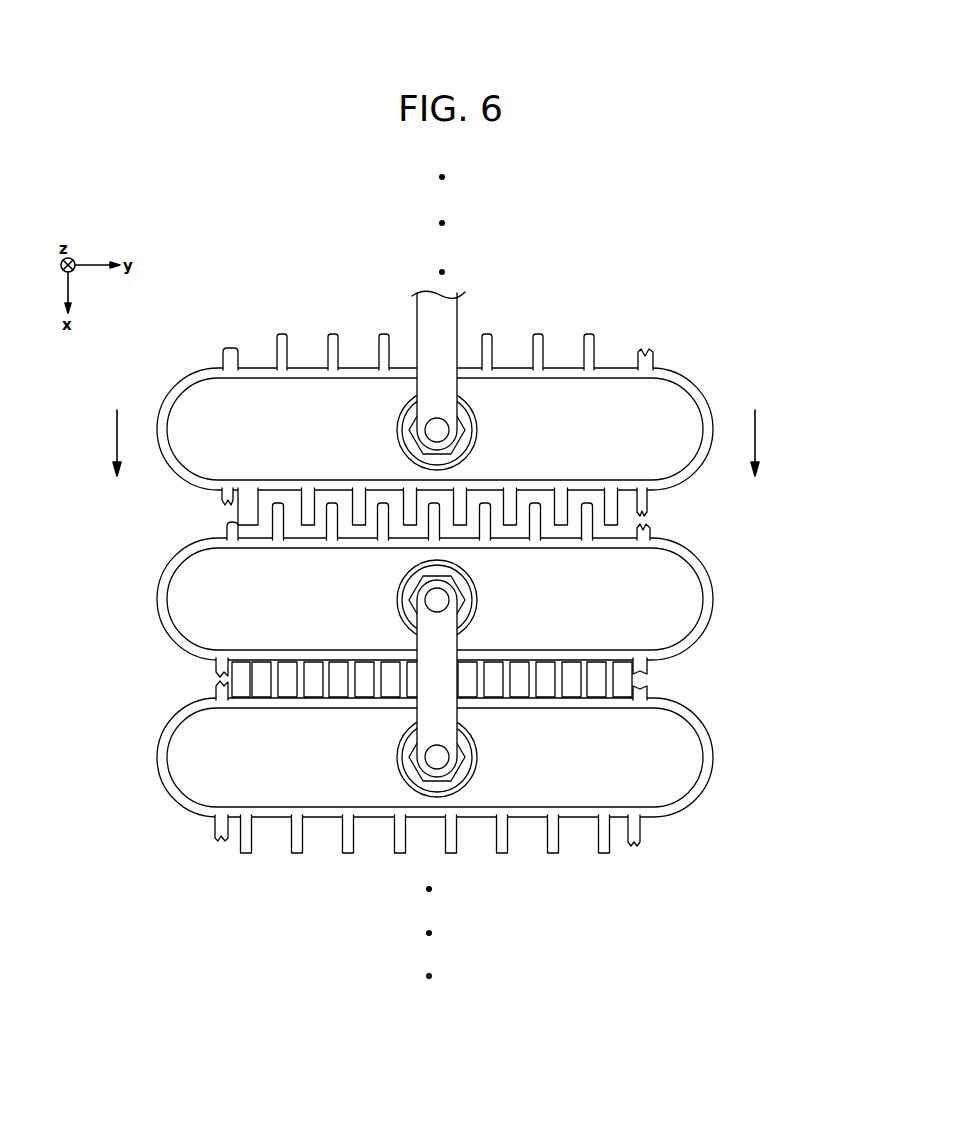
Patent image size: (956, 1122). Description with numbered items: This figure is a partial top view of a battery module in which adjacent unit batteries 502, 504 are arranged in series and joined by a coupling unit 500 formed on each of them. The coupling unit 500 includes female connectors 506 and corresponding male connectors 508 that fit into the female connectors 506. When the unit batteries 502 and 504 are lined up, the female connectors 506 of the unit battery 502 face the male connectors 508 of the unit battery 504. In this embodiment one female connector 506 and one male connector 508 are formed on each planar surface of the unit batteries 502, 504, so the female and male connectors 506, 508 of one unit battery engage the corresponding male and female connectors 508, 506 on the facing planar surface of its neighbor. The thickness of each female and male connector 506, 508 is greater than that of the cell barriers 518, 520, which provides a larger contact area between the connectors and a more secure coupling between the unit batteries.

The coupling unit 500 is at (446, 608).
The unit battery 502 is at (712, 630).
The unit battery 504 is at (177, 487).
The female connector 506 is at (650, 532).
The male connector 508 is at (647, 503).
The cell barrier 518 is at (278, 663).
The cell barrier 520 is at (248, 667).